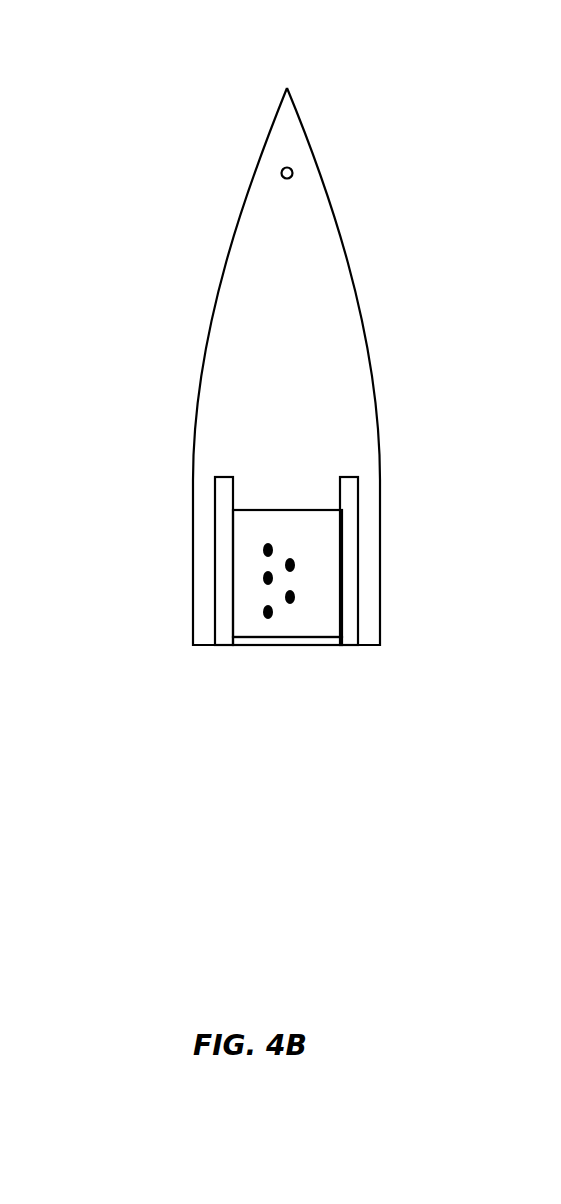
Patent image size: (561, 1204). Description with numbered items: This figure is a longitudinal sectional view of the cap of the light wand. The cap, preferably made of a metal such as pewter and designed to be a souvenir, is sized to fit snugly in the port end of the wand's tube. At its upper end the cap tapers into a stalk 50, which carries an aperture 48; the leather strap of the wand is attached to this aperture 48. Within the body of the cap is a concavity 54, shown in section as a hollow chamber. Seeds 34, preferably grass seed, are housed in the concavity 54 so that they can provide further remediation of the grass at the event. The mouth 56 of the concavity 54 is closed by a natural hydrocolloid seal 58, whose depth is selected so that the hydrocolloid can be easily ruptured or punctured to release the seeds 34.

The stalk 50 is at (341, 331).
The aperture 48 is at (391, 151).
The concavity 54 is at (238, 515).
The seeds 34 is at (360, 555).
The mouth 56 is at (343, 577).
The natural hydrocolloid seal 58 is at (346, 695).